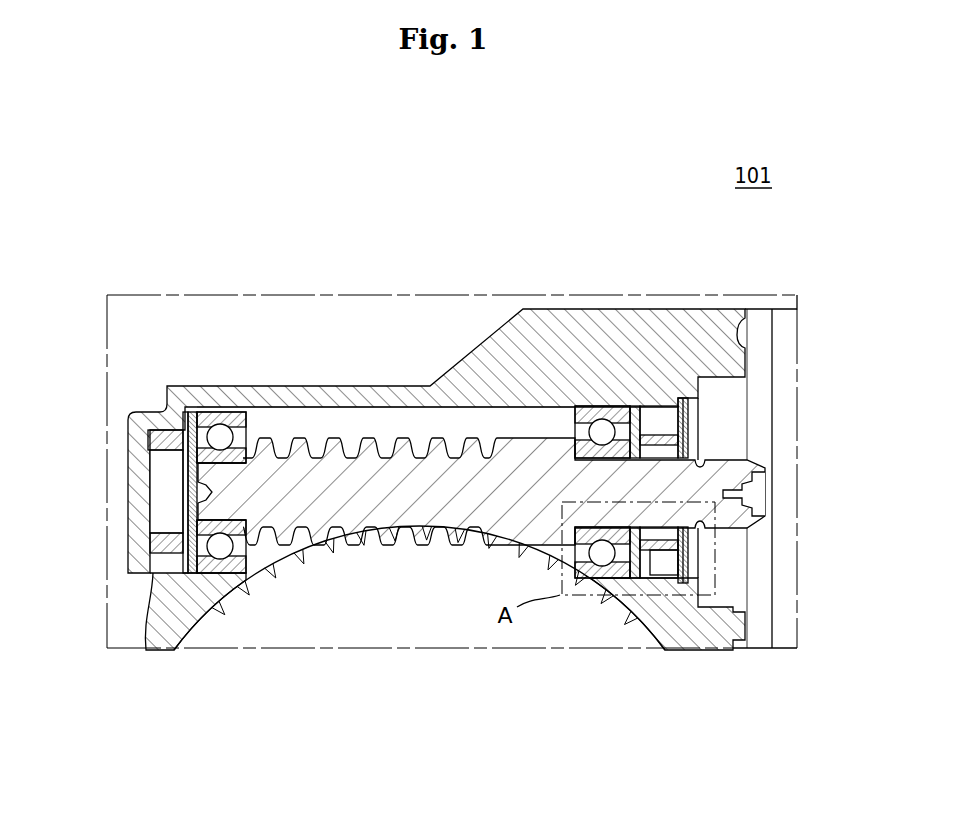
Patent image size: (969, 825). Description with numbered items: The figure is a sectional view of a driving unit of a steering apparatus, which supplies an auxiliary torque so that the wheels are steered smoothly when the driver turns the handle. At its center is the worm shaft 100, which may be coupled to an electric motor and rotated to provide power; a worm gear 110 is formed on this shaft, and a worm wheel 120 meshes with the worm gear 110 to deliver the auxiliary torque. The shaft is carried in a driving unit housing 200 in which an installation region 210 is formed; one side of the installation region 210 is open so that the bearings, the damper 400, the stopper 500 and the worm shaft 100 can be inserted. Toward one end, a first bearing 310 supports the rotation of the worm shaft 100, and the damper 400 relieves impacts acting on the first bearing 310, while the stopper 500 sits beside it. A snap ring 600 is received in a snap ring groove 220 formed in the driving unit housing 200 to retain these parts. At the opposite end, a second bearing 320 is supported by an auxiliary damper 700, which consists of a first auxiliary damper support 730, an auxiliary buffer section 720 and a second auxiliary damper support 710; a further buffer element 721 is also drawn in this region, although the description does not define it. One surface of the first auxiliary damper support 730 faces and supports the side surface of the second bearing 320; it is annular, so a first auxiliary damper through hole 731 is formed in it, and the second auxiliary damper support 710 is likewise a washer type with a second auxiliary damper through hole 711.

The worm shaft 100 is at (730, 468).
The worm gear 110 is at (403, 428).
The worm wheel 120 is at (346, 640).
The driving unit housing 200 is at (608, 338).
The installation region 210 is at (347, 420).
The snap ring groove 220 is at (690, 625).
The first bearing 310 is at (568, 422).
The second bearing 320 is at (250, 420).
The damper 400 is at (637, 590).
The stopper 500 is at (667, 584).
The snap ring 600 is at (689, 560).
The auxiliary damper 700 is at (260, 716).
The second auxiliary damper support 710 is at (148, 582).
The second auxiliary damper through hole 711 is at (152, 510).
The auxiliary buffer section 720 is at (232, 472).
The auxiliary buffer section 721 is at (170, 463).
The first auxiliary damper support 730 is at (207, 580).
The first auxiliary damper through hole 731 is at (190, 487).